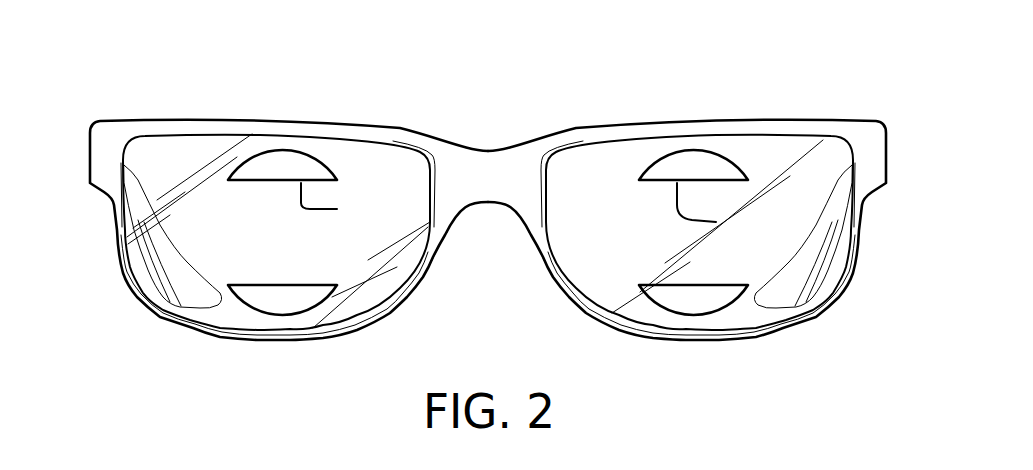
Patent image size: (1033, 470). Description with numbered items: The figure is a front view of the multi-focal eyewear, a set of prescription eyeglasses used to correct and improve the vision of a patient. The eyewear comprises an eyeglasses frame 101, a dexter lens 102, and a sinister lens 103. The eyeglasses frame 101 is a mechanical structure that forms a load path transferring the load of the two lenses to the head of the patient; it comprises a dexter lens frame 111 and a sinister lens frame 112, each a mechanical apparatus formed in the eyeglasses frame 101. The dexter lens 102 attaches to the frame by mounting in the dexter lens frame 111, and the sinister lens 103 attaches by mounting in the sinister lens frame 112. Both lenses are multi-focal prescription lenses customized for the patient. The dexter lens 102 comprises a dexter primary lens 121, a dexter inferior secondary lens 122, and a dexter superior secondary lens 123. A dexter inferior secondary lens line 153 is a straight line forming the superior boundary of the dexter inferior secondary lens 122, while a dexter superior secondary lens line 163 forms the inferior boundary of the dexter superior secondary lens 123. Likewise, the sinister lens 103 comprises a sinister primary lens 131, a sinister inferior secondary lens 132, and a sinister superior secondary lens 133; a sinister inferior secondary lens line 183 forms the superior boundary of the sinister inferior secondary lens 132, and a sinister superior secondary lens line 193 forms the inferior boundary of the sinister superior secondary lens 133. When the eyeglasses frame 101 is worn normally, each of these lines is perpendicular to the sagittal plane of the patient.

The eyeglasses frame 101 is at (100, 120).
The dexter lens 102 is at (367, 143).
The sinister lens 103 is at (577, 165).
The dexter lens frame 111 is at (433, 262).
The sinister lens frame 112 is at (545, 278).
The dexter primary lens 121 is at (187, 177).
The dexter inferior secondary lens 122 is at (272, 300).
The dexter superior secondary lens 123 is at (270, 168).
The sinister primary lens 131 is at (781, 187).
The sinister inferior secondary lens 132 is at (687, 300).
The sinister superior secondary lens 133 is at (702, 167).
The dexter inferior secondary lens line 153 is at (273, 287).
The dexter superior secondary lens line 163 is at (350, 204).
The sinister inferior secondary lens line 183 is at (725, 210).
The sinister superior secondary lens line 193 is at (688, 283).